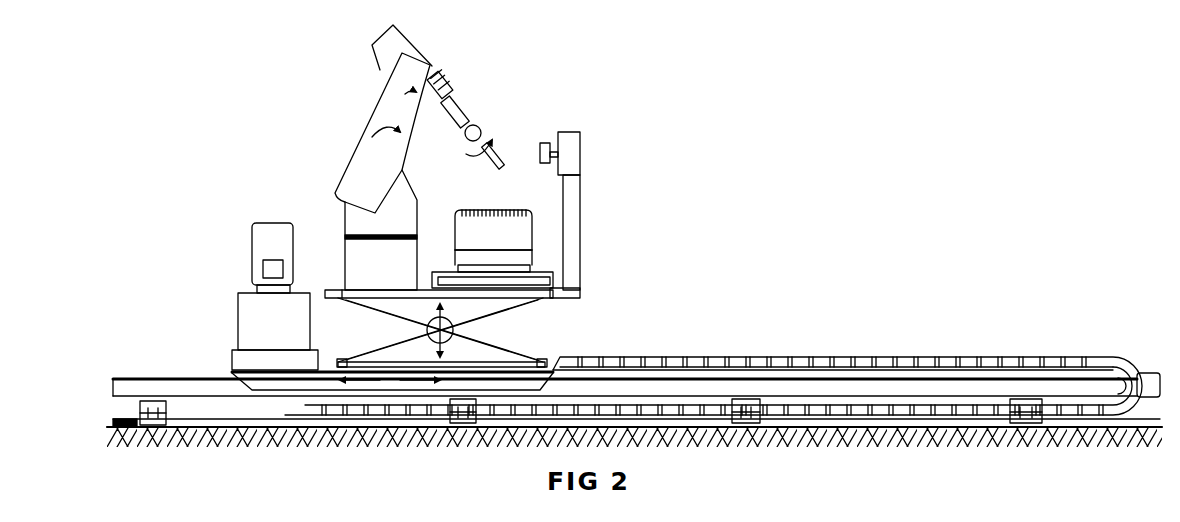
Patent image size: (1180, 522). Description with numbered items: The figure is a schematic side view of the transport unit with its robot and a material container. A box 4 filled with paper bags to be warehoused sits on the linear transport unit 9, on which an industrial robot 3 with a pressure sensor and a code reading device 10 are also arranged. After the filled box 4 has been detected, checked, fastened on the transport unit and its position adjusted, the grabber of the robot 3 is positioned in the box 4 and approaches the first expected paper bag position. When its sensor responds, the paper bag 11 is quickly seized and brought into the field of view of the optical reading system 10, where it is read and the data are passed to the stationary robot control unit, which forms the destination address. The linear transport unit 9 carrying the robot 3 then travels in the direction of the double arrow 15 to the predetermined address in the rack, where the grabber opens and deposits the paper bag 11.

The industrial robot 3 is at (357, 153).
The box 4 is at (473, 258).
The linear transport unit 9 is at (232, 367).
The code reading device 10 is at (580, 166).
The paper bag 11 is at (467, 226).
The double arrow 15 is at (402, 382).